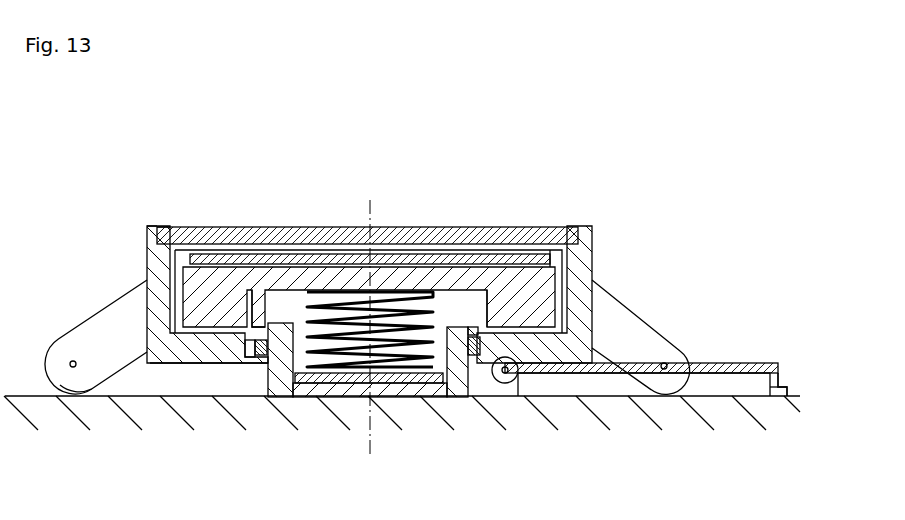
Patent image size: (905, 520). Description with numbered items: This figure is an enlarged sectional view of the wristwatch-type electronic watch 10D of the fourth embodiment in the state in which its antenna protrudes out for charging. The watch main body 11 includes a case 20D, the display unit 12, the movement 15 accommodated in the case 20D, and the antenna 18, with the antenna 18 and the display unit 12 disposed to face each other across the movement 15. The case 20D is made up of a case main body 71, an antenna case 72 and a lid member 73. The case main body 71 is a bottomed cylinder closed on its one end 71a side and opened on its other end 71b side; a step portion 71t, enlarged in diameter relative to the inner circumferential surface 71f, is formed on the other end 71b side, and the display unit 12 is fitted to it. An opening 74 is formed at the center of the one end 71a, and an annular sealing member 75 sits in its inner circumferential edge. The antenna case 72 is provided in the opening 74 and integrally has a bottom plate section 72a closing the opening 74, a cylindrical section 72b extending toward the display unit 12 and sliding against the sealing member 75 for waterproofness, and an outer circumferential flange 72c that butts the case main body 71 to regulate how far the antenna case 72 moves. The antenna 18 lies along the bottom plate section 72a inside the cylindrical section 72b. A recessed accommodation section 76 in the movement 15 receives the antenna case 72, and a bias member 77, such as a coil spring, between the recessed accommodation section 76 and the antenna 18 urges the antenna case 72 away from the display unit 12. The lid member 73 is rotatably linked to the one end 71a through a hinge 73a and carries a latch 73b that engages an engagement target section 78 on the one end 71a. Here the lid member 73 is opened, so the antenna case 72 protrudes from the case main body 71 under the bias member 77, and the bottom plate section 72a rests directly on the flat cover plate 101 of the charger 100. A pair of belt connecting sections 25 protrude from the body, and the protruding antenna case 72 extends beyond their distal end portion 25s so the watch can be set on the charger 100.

The wristwatch-type electronic watch 10D is at (582, 138).
The watch main body 11 is at (508, 228).
The display unit 12 is at (467, 227).
The movement 15 is at (548, 262).
The antenna 18 is at (400, 383).
The case 20D is at (612, 230).
The belt connecting section 25 is at (74, 323).
The distal end portion 25s is at (78, 386).
The case main body 71 is at (165, 256).
The one end 71a is at (174, 364).
The other end 71b is at (152, 227).
The step portion 71t is at (168, 228).
The inner circumferential surface 71f is at (185, 286).
The antenna case 72 is at (455, 397).
The bottom plate section 72a is at (345, 397).
The cylindrical section 72b is at (474, 350).
The outer circumferential flange 72c is at (262, 340).
The lid member 73 is at (736, 363).
The hinge 73a is at (508, 375).
The latch 73b is at (782, 388).
The opening 74 is at (283, 396).
The sealing member 75 is at (251, 327).
The recessed accommodation section 76 is at (446, 305).
The bias member 77 is at (352, 295).
The engagement target section 78 is at (248, 358).
The charger 100 is at (716, 396).
The cover plate 101 is at (752, 390).